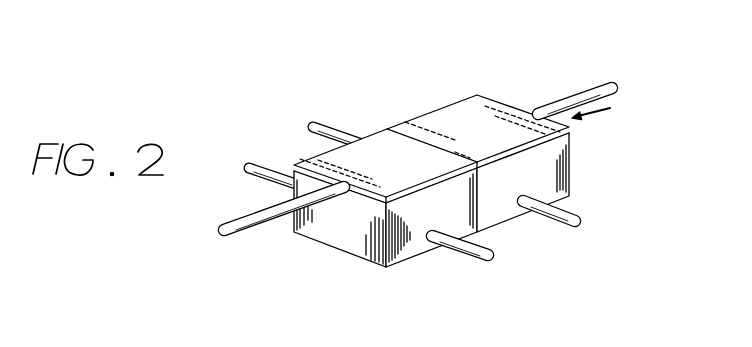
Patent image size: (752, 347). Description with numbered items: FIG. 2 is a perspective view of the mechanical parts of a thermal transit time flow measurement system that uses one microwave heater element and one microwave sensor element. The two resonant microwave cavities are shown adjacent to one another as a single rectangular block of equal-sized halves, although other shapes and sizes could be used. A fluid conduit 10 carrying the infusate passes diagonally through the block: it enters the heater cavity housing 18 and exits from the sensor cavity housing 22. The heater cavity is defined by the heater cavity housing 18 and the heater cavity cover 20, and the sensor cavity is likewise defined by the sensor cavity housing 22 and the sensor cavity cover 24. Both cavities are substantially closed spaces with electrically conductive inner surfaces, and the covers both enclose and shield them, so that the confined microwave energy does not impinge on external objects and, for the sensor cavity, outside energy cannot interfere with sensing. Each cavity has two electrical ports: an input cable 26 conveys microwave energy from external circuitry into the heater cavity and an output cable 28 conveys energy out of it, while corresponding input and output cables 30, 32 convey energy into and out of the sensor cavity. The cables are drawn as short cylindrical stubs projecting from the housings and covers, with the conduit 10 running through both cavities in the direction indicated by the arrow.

The fluid conduit 10 is at (240, 222).
The heater cavity housing 18 is at (495, 210).
The heater cavity cover 20 is at (468, 117).
The sensor cavity housing 22 is at (343, 243).
The sensor cavity cover 24 is at (384, 153).
The input cable 26 is at (333, 128).
The output cable 28 is at (578, 205).
The input cable 30 is at (265, 170).
The output cable 32 is at (462, 255).